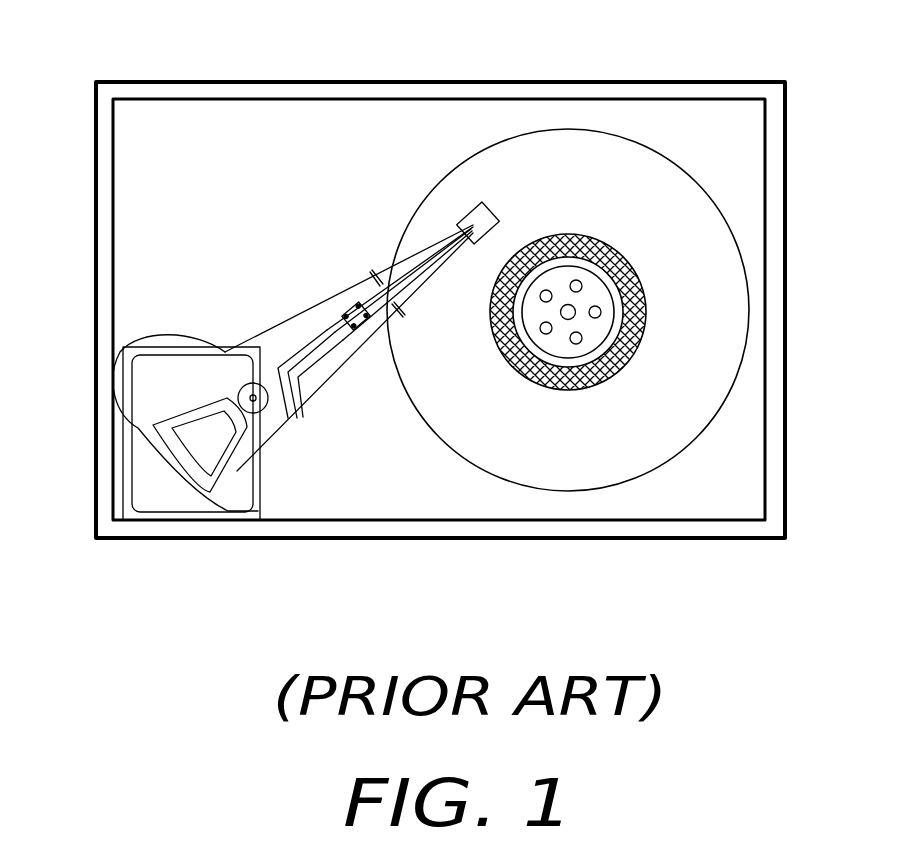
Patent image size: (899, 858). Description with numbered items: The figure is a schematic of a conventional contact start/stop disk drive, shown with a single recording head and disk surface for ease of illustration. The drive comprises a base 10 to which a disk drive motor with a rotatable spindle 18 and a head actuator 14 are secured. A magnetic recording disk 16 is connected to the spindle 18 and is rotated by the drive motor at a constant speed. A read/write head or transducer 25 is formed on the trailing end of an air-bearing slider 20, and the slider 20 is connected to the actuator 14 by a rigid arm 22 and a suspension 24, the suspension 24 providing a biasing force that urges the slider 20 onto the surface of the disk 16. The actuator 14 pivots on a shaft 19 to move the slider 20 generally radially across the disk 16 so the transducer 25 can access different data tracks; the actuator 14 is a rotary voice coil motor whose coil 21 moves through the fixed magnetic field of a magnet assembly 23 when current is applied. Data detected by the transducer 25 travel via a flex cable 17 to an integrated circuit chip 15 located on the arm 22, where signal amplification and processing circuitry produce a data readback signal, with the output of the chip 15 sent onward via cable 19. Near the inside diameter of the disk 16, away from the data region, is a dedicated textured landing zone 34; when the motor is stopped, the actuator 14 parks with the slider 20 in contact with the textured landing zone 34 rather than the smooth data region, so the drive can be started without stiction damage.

The base 10 is at (784, 198).
The head actuator 14 is at (152, 510).
The integrated circuit chip 15 is at (348, 310).
The magnetic recording disk 16 is at (730, 397).
The flex cable 17 is at (383, 270).
The spindle 18 is at (598, 290).
The shaft 19 is at (118, 345).
The air-bearing slider 20 is at (483, 203).
The coil 21 is at (153, 425).
The rigid arm 22 is at (323, 380).
The magnet assembly 23 is at (173, 462).
The suspension 24 is at (405, 300).
The read/write head or transducer 25 is at (473, 246).
The textured landing zone 34 is at (637, 328).